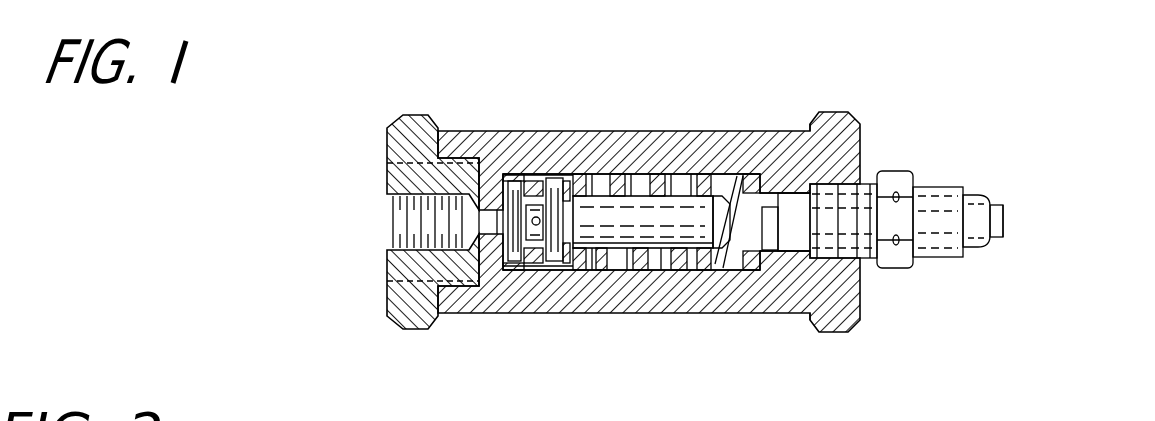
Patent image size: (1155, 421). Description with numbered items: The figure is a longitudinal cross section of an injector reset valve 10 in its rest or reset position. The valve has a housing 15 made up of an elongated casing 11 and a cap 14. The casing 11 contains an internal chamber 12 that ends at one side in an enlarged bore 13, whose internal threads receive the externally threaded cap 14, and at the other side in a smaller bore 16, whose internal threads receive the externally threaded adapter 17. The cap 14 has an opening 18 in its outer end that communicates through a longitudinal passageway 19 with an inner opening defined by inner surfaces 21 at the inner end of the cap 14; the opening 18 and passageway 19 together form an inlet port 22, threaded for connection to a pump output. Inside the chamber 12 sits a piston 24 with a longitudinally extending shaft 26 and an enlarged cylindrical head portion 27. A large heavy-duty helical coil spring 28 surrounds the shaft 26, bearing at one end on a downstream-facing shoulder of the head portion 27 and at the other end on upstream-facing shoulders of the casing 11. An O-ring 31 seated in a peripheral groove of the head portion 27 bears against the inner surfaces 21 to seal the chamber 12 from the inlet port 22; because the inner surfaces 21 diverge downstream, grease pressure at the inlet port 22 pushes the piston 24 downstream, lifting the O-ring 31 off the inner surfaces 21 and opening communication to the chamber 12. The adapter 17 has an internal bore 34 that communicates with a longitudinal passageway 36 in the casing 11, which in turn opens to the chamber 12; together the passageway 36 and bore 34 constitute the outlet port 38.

The injector reset valve 10 is at (770, 108).
The elongated casing 11 is at (652, 131).
The internal chamber 12 is at (637, 174).
The enlarged bore 13 is at (560, 185).
The cap 14 is at (403, 114).
The housing 15 is at (528, 122).
The smaller bore 16 is at (860, 158).
The adapter 17 is at (940, 188).
The opening 18 is at (387, 210).
The longitudinal passageway 19 is at (492, 172).
The inner surfaces 21 is at (525, 178).
The inlet port 22 is at (410, 231).
The piston 24 is at (682, 248).
The shaft 26 is at (703, 262).
The head portion 27 is at (507, 270).
The helical coil spring 28 is at (607, 253).
The O-ring 31 is at (531, 268).
The internal bore 34 is at (973, 222).
The longitudinal passageway 36 is at (770, 236).
The outlet port 38 is at (1022, 220).